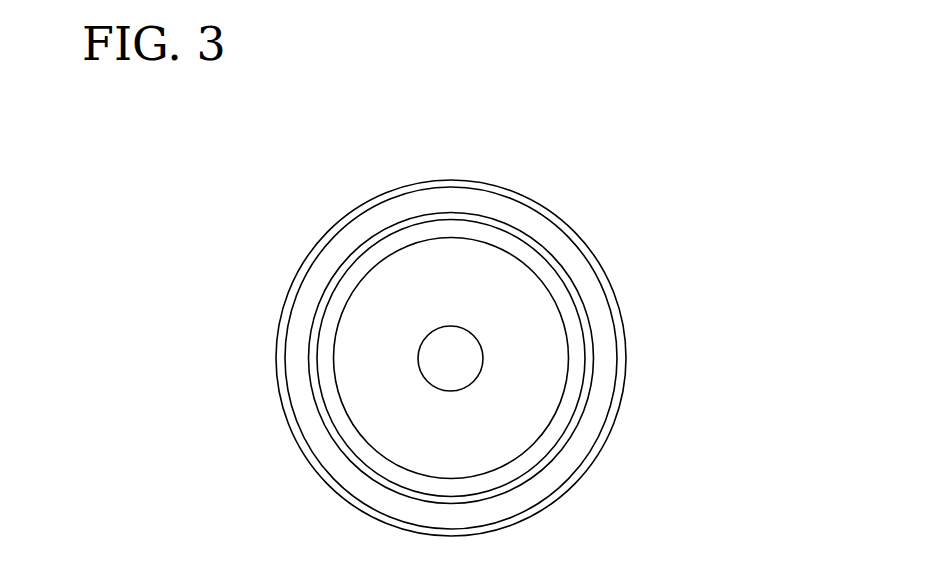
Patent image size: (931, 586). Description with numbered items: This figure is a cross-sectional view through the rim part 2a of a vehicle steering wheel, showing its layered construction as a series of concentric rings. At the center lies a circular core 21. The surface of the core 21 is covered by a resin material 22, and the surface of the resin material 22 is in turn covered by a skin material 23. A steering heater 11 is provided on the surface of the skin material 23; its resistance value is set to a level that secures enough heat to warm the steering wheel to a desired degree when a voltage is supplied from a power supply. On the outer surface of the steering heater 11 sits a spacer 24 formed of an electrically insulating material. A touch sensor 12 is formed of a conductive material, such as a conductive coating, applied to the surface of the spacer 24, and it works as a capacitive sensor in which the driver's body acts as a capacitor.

The rim part 2a is at (698, 152).
The touch sensor 12 is at (417, 187).
The spacer 24 is at (461, 197).
The steering heater 11 is at (493, 218).
The skin material 23 is at (520, 247).
The resin material 22 is at (537, 302).
The core 21 is at (463, 348).